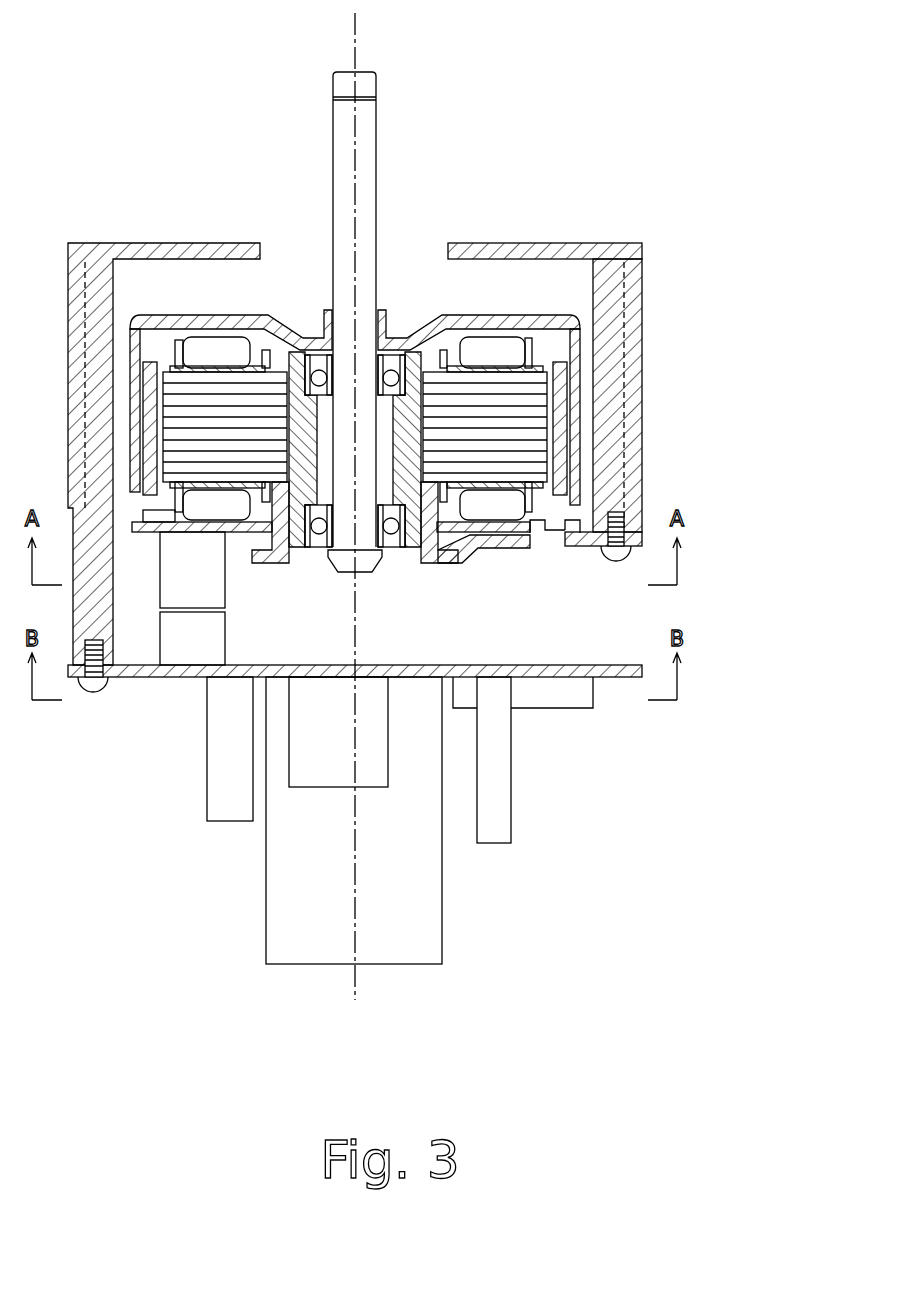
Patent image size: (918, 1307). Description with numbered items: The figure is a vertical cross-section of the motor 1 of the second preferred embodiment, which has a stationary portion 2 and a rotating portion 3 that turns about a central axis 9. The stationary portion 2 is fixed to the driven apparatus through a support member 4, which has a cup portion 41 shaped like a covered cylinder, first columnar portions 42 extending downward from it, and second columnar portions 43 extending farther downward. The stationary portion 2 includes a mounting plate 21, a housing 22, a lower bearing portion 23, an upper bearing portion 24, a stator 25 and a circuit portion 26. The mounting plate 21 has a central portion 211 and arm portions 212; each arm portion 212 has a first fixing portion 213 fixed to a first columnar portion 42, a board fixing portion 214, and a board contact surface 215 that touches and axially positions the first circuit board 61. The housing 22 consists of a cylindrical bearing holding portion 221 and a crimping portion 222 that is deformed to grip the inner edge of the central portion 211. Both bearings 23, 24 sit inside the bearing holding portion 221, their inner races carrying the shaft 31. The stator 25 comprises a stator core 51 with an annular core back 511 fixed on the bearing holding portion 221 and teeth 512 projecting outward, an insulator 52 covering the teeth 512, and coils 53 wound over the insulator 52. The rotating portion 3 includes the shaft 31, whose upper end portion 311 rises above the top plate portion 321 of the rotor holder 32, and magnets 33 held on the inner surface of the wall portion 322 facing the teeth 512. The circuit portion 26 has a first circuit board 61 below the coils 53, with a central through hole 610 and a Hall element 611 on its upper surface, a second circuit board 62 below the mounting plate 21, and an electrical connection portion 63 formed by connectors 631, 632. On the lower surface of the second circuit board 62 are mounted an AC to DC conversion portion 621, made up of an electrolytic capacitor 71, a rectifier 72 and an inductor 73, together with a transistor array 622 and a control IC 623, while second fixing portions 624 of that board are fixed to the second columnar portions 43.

The motor 1 is at (143, 283).
The stationary portion 2 is at (490, 890).
The rotating portion 3 is at (313, 305).
The support member 4 is at (652, 296).
The central axis 9 is at (355, 47).
The mounting plate 21 is at (437, 622).
The housing 22 is at (345, 622).
The lower bearing portion 23 is at (393, 548).
The upper bearing portion 24 is at (395, 358).
The stator 25 is at (425, 158).
The circuit portion 26 is at (200, 784).
The shaft 31 is at (343, 140).
The rotor holder 32 is at (143, 196).
The magnets 33 is at (150, 426).
The cup portion 41 is at (600, 250).
The first columnar portions 42 is at (574, 546).
The second columnar portions 43 is at (92, 604).
The stator core 51 is at (478, 196).
The insulator 52 is at (530, 360).
The coils 53 is at (505, 350).
The first circuit board 61 is at (113, 592).
The second circuit board 62 is at (225, 668).
The electrical connection portion 63 is at (165, 746).
The electrolytic capacitor 71 is at (332, 932).
The rectifier 72 is at (320, 765).
The inductor 73 is at (230, 803).
The central portion 211 is at (452, 564).
The arm portions 212 is at (500, 548).
The first fixing portion 213 is at (620, 562).
The board fixing portion 214 is at (546, 526).
The board contact surface 215 is at (573, 522).
The bearing holding portion 221 is at (318, 548).
The crimping portion 222 is at (275, 562).
The upper end portion 311 is at (365, 80).
The top plate portion 321 is at (195, 323).
The wall portion 322 is at (137, 357).
The core back 511 is at (432, 400).
The teeth 512 is at (488, 400).
The through hole 610 is at (426, 566).
The Hall element 611 is at (152, 505).
The AC to DC conversion portion 621 is at (323, 1032).
The transistor array 622 is at (500, 776).
The control IC 623 is at (556, 696).
The second fixing portions 624 is at (86, 692).
The connector 631 is at (177, 584).
The connector 632 is at (177, 642).